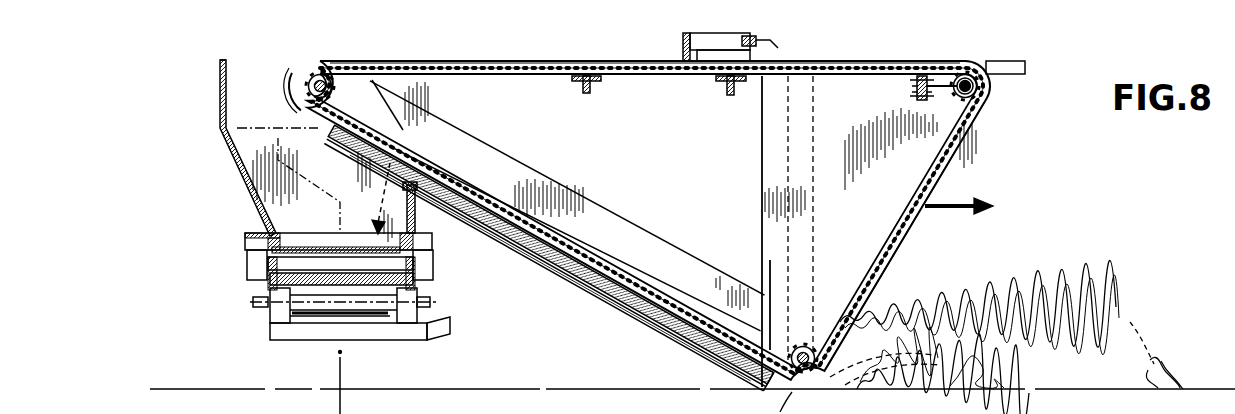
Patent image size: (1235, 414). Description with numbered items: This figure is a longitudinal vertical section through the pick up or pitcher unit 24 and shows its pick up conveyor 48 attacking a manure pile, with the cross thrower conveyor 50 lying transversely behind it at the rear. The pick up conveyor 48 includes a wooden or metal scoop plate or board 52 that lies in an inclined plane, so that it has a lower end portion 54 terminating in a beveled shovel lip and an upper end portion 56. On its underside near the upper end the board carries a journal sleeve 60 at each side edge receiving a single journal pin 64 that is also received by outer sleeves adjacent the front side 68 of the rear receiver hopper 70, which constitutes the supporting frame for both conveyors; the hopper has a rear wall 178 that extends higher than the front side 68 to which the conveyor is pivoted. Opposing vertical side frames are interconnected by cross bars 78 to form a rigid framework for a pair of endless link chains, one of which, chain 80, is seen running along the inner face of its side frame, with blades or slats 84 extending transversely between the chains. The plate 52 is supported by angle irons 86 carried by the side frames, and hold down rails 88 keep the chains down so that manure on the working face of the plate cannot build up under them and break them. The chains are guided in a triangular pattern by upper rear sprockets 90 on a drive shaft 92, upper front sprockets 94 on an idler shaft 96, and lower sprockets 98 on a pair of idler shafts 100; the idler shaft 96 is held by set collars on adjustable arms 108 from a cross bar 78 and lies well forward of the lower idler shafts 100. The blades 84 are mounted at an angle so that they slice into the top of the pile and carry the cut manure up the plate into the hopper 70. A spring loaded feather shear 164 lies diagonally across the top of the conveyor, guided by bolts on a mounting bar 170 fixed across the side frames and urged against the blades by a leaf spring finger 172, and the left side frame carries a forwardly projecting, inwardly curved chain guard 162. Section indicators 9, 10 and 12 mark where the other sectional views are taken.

The section line 9- 9 is at (277, 55).
The cage house 10 is at (583, 221).
The section line 12- 12 is at (663, 18).
The pitcher unit 24 is at (1010, 108).
The pick up conveyor 48 is at (978, 160).
The cross thrower conveyor 50 is at (254, 310).
The scoop plate or board 52 is at (637, 302).
The lower end portion 54 is at (757, 382).
The upper end portion 56 is at (448, 128).
The journal sleeve 60 is at (420, 212).
The journal pin 64 is at (443, 150).
The front side 68 is at (390, 208).
The rear receiver hopper 70 is at (231, 177).
The cross bars 78 is at (735, 86).
The endless link chain 80 is at (837, 62).
The blades or slats 84 is at (700, 318).
The angle irons 86 is at (684, 332).
The hold down rails 88 is at (666, 283).
The upper rear sprockets 90 is at (306, 94).
The drive shaft 92 is at (345, 78).
The upper front sprockets 94 is at (967, 62).
The idler shaft 96 is at (962, 98).
The lower sprockets 98 is at (800, 334).
The idler shafts 100 is at (810, 383).
The adjustable arms 108 is at (910, 83).
The chain guard 162 is at (1024, 58).
The feather shear 164 is at (682, 34).
The mounting bar 170 is at (817, 60).
The leaf spring finger 172 is at (728, 32).
The rear wall 178 is at (214, 140).